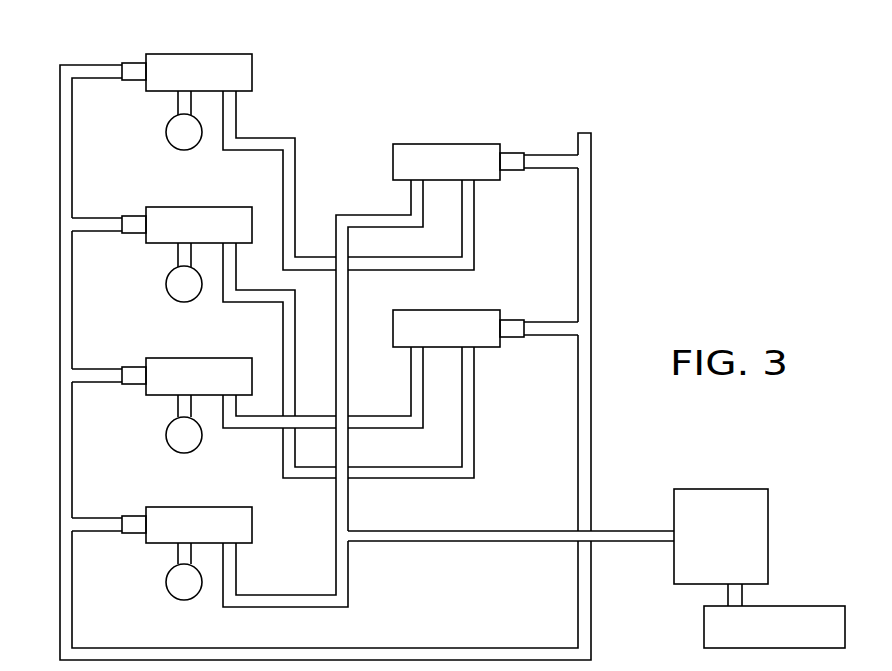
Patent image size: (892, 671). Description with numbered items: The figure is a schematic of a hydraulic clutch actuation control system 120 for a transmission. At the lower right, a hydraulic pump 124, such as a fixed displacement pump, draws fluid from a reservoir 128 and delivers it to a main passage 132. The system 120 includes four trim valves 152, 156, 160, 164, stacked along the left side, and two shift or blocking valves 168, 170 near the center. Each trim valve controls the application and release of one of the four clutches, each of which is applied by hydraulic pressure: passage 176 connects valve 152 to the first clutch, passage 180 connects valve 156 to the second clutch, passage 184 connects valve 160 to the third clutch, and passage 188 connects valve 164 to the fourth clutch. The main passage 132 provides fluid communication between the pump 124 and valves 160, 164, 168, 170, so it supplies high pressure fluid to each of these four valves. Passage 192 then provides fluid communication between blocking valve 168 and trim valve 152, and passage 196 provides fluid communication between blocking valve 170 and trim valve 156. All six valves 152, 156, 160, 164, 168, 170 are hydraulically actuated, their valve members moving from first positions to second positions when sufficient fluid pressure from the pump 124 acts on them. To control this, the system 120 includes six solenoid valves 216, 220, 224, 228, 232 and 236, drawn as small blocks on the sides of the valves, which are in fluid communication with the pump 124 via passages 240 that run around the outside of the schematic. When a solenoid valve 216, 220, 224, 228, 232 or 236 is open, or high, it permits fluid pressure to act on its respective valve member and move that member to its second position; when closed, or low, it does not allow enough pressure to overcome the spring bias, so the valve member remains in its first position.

The hydraulic clutch actuation control system 120 is at (436, 78).
The hydraulic pump 124 is at (722, 489).
The reservoir 128 is at (778, 606).
The main passage 132 is at (388, 416).
The trim valve 152 is at (157, 54).
The trim valve 156 is at (157, 207).
The trim valve 160 is at (182, 358).
The trim valve 164 is at (157, 507).
The blocking valve 168 is at (443, 144).
The blocking valve 170 is at (418, 310).
The passage 176 is at (175, 102).
The passage 180 is at (175, 257).
The passage 184 is at (173, 405).
The passage 188 is at (175, 556).
The passage 192 is at (297, 178).
The passage 196 is at (222, 290).
The solenoid valve 216 is at (137, 63).
The solenoid valve 220 is at (140, 216).
The solenoid valve 224 is at (138, 367).
The solenoid valve 228 is at (140, 516).
The solenoid valve 232 is at (514, 153).
The solenoid valve 236 is at (514, 320).
The passages 240 is at (58, 303).